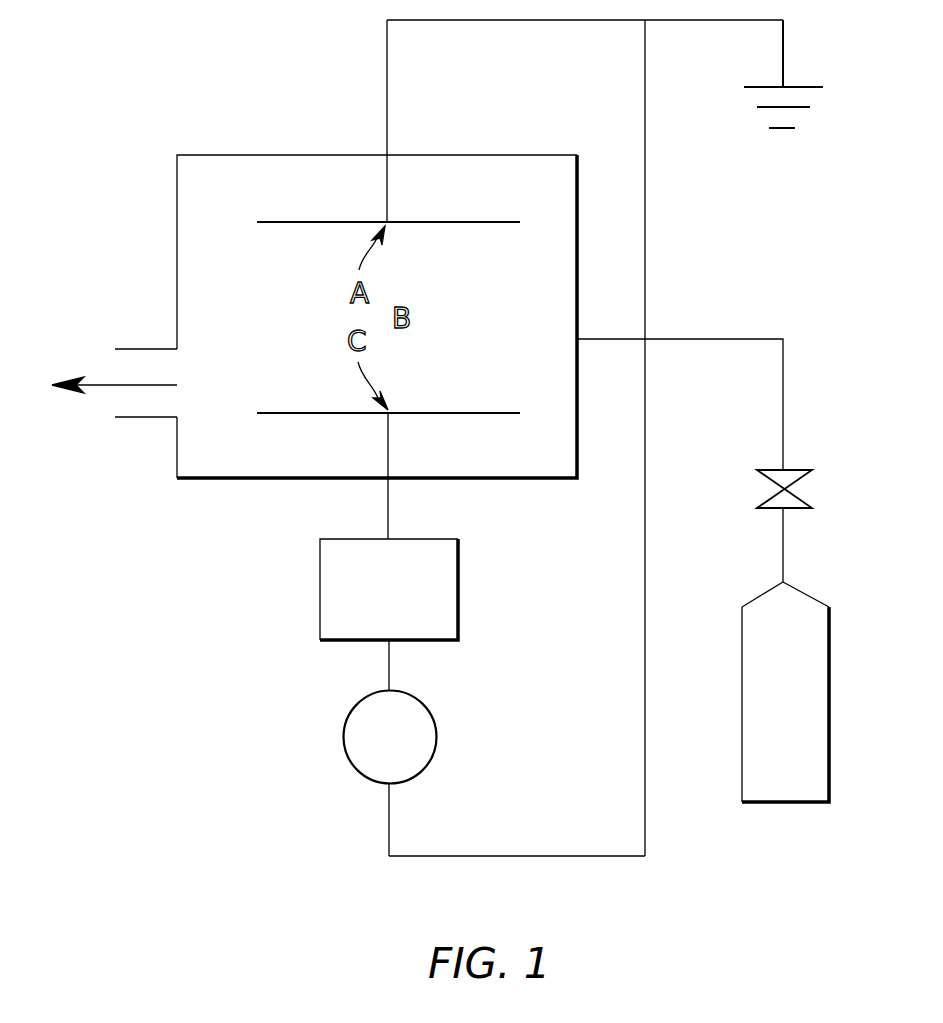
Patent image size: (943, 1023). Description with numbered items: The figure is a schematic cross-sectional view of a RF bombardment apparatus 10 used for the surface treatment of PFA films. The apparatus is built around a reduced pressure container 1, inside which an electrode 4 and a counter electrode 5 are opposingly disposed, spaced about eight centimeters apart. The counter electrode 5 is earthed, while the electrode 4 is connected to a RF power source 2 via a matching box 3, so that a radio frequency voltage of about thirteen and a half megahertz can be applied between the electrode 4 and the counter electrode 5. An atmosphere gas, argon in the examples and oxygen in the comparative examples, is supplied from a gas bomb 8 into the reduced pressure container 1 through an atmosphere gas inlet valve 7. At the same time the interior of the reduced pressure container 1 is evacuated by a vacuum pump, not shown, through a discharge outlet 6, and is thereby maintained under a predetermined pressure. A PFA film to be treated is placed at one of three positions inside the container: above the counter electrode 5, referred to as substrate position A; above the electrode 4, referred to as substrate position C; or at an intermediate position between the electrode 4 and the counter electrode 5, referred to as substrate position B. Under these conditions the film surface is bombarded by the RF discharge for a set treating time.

The reduced pressure container 1 is at (177, 200).
The RF power source 2 is at (436, 742).
The matching box 3 is at (458, 593).
The electrode 4 is at (276, 412).
The counter electrode 5 is at (282, 223).
The discharge outlet 6 is at (142, 348).
The atmosphere gas inlet valve 7 is at (805, 508).
The gas bomb 8 is at (785, 692).
The RF bombardment apparatus 10 is at (277, 125).